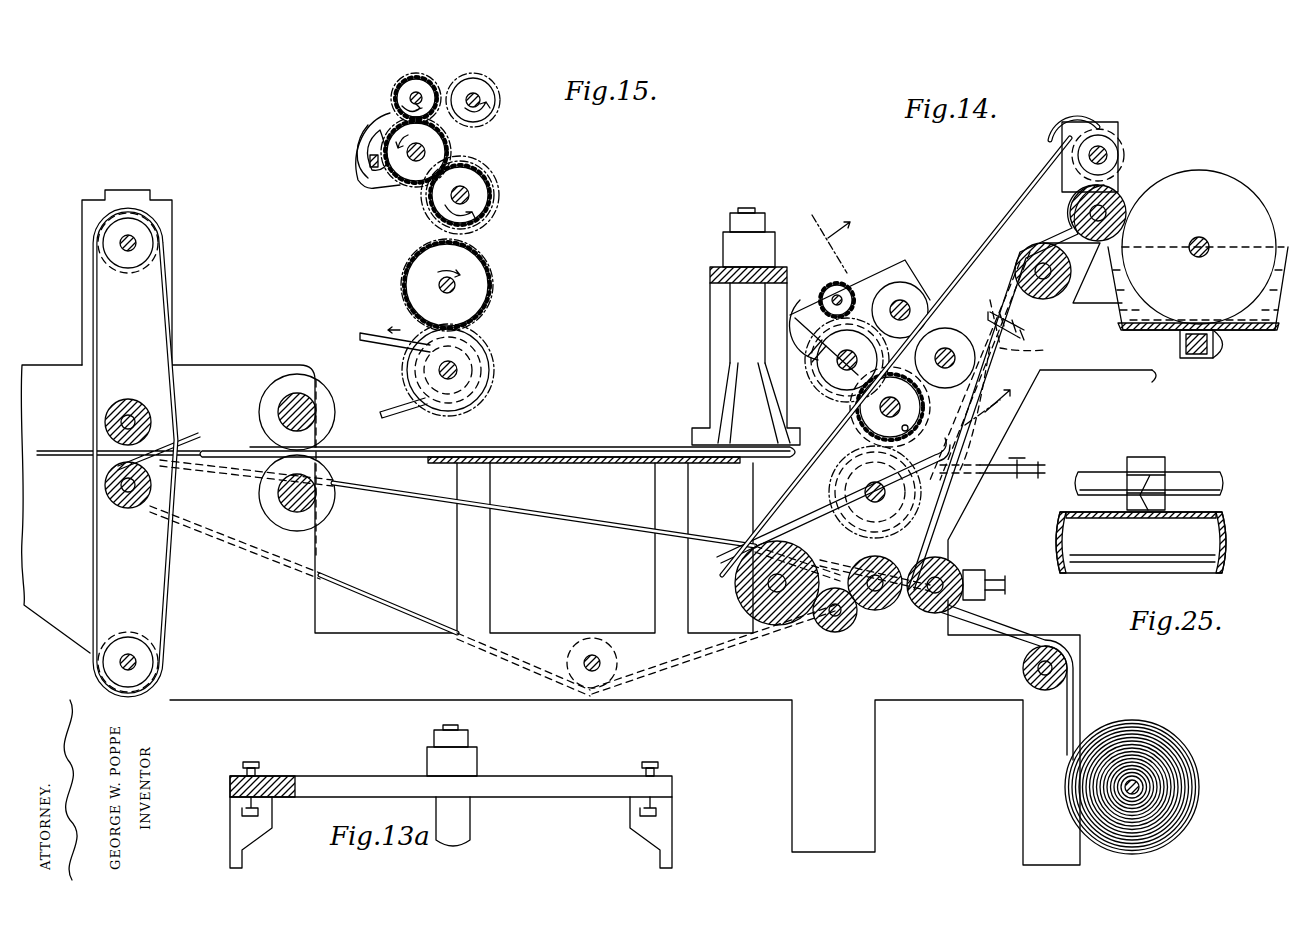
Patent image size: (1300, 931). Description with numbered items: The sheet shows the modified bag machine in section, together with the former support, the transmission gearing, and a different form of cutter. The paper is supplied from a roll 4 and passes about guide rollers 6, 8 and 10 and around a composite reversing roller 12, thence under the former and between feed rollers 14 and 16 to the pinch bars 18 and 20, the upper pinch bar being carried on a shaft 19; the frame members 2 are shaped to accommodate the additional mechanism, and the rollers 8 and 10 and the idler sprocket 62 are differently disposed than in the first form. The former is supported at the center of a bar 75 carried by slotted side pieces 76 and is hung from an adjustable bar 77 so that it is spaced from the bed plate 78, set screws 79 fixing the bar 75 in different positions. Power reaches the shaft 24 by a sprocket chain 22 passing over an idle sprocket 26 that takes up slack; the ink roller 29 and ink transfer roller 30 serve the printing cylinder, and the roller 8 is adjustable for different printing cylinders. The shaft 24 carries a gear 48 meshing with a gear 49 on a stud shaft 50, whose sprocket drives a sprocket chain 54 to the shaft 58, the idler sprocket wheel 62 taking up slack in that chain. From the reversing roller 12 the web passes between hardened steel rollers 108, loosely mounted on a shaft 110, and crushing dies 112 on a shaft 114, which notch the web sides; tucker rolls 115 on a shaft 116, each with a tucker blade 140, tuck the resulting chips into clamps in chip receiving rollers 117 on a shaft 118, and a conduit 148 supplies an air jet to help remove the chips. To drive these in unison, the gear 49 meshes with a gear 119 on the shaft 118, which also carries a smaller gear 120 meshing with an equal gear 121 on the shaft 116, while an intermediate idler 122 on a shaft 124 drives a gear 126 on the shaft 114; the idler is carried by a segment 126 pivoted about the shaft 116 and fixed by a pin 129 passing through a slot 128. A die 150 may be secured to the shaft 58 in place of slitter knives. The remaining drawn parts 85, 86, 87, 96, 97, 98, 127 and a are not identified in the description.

In FIG. 14, the side frame 2 is at (586, 527).
In FIG. 14, the roll 4 is at (1145, 725).
In FIG. 14, the guide roller 6 is at (1022, 668).
In FIG. 14, the guide roller 8 is at (1265, 300).
In FIG. 14, the guide roller 10 is at (1071, 275).
In FIG. 14, the reversing roller 12 is at (1085, 240).
In FIG. 25, the reversing roller 12 is at (1075, 573).
In FIG. 14, the feed roller 14 is at (512, 447).
In FIG. 14, the feed roller 16 is at (330, 395).
In FIG. 14, the pinch bar 18 is at (140, 505).
In FIG. 14, the shaft 19 is at (921, 314).
In FIG. 14, the pinch bar 20 is at (125, 400).
In FIG. 14, the sprocket chain 22 is at (370, 590).
In FIG. 15, the sprocket chain 22 is at (378, 330).
In FIG. 14, the shaft 24 is at (872, 600).
In FIG. 15, the shaft 24 is at (457, 372).
In FIG. 14, the idle sprocket 26 is at (580, 690).
In FIG. 14, the ink roller 29 is at (742, 595).
In FIG. 14, the ink transfer roller 30 is at (830, 630).
In FIG. 15, the gear 48 is at (485, 362).
In FIG. 14, the gear 49 is at (910, 510).
In FIG. 15, the gear 49 is at (480, 302).
In FIG. 14, the stud shaft 50 is at (885, 492).
In FIG. 15, the stud shaft 50 is at (455, 285).
In FIG. 14, the sprocket chain 54 is at (1035, 196).
In FIG. 14, the shaft 58 is at (1110, 150).
In FIG. 25, the shaft 58 is at (1195, 478).
In FIG. 14, the idler sprocket wheel 62 is at (1025, 330).
In FIG. 14, the bar 75 is at (708, 274).
In FIG. 13A, the bar 75 is at (550, 770).
In FIG. 14, the side piece 76 is at (715, 340).
In FIG. 13A, the side piece 76 is at (262, 826).
In FIG. 14, the bar 77 is at (740, 307).
In FIG. 13A, the bar 77 is at (458, 832).
In FIG. 14, the bed plate 78 is at (572, 470).
In FIG. 13A, the set screw 79 is at (258, 764).
In FIG. 14, the support block 85 is at (1205, 358).
In FIG. 14, the frame bar 86 is at (1159, 383).
In FIG. 14, the wheel 87 is at (1250, 210).
In FIG. 14, the guide plate 96 is at (185, 444).
In FIG. 14, the chain 97 is at (168, 290).
In FIG. 14, the sprocket 98 is at (150, 238).
In FIG. 14, the hardened steel roller 108 is at (1024, 385).
In FIG. 14, the shaft 110 is at (945, 350).
In FIG. 14, the crushing roller or die 112 is at (905, 290).
In FIG. 14, the shaft 114 is at (900, 300).
In FIG. 15, the shaft 114 is at (473, 95).
In FIG. 14, the tucker roll 115 is at (830, 395).
In FIG. 14, the shaft 116 is at (830, 375).
In FIG. 15, the shaft 116 is at (400, 170).
In FIG. 14, the chip receiving roller 117 is at (870, 422).
In FIG. 14, the shaft 118 is at (880, 405).
In FIG. 15, the shaft 118 is at (470, 195).
In FIG. 14, the gear 119 is at (960, 430).
In FIG. 15, the gear 119 is at (495, 225).
In FIG. 15, the smaller gear 120 is at (492, 205).
In FIG. 15, the gear 121 is at (410, 158).
In FIG. 14, the intermediate idler 122 is at (835, 280).
In FIG. 15, the intermediate idler 122 is at (395, 78).
In FIG. 14, the shaft 124 is at (833, 298).
In FIG. 15, the shaft 124 is at (418, 96).
In FIG. 14, the gear / segment 126 is at (795, 300).
In FIG. 15, the gear / segment 126 is at (500, 96).
In FIG. 15, the arm edge 127 is at (363, 128).
In FIG. 14, the slot 128 is at (815, 345).
In FIG. 15, the slot 128 is at (372, 142).
In FIG. 15, the pin 129 is at (370, 160).
In FIG. 14, the tucker blade 140 is at (735, 370).
In FIG. 14, the conduit 148 is at (1040, 466).
In FIG. 25, the die 150 is at (1160, 462).
In FIG. 14, the dashed path a is at (1028, 351).